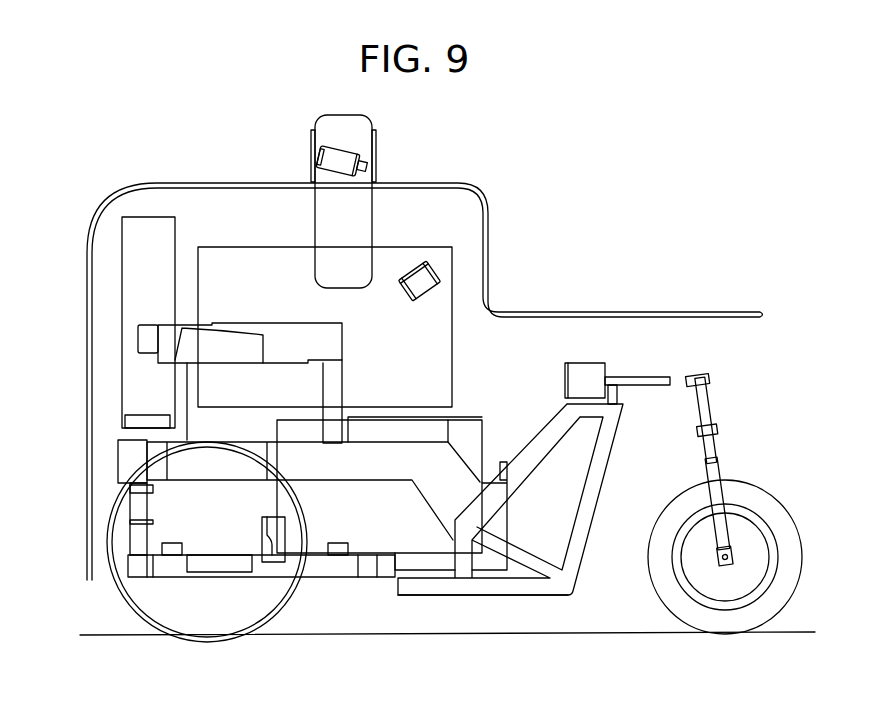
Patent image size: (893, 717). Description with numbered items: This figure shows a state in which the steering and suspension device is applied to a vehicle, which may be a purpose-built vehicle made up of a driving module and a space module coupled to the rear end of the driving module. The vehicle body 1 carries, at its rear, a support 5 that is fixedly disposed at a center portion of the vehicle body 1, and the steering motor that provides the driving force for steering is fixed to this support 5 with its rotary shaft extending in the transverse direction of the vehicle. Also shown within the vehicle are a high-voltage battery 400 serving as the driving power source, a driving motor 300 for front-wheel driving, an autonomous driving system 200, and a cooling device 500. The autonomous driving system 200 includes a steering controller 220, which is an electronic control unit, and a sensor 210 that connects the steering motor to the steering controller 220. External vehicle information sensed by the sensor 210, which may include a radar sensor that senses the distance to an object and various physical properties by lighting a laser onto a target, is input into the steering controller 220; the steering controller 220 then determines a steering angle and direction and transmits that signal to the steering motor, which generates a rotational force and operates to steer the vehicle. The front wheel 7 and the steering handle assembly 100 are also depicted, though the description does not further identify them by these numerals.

The vehicle body 1 is at (395, 613).
The support 5 is at (578, 558).
The front wheel 7 is at (765, 497).
The steering handle assembly 100 is at (604, 346).
The autonomous driving (AD) system 200 is at (260, 247).
The sensor 210 is at (352, 148).
The steering controller 220 is at (428, 267).
The driving motor 300 is at (178, 555).
The high-voltage battery 400 is at (328, 555).
The cooling device 500 is at (122, 338).